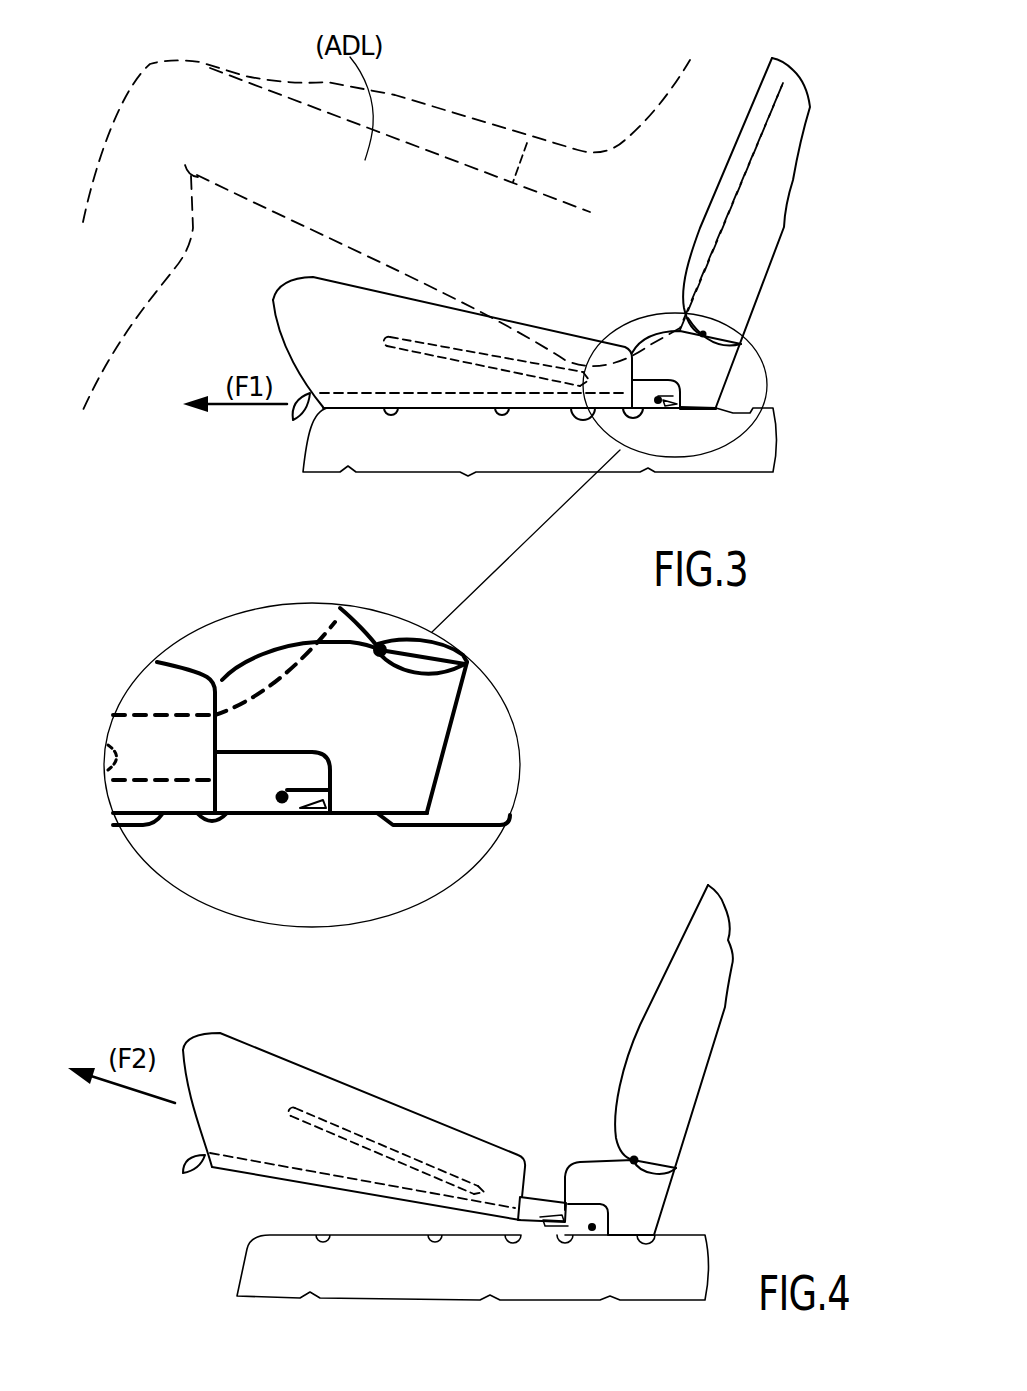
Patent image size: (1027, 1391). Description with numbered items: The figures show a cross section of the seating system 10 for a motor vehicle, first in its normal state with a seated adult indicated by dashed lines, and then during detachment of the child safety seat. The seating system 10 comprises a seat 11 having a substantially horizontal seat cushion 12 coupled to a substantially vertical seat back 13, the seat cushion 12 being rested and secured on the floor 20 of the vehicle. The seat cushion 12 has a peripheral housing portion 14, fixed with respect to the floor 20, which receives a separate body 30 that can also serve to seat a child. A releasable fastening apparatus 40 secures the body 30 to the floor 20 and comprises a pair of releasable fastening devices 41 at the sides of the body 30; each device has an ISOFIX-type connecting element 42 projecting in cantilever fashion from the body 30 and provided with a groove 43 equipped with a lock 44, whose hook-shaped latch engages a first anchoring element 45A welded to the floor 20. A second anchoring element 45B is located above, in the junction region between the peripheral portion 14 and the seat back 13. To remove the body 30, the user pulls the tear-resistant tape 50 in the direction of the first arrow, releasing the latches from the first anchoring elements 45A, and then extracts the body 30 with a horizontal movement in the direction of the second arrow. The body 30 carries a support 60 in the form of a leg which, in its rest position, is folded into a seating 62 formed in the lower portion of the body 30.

In FIG. 3, the seating system 10 is at (452, 489).
In FIG. 4, the seating system 10 is at (502, 1060).
In FIG. 3, the seat 11 is at (573, 137).
In FIG. 4, the seat 11 is at (556, 1112).
In FIG. 3, the seat cushion 12 is at (375, 542).
In FIG. 3, the seat back 13 is at (767, 240).
In FIG. 4, the seat back 13 is at (652, 1010).
In FIG. 3, the peripheral housing portion 14 is at (515, 549).
In FIG. 4, the peripheral housing portion 14 is at (649, 1165).
In FIG. 3, the floor 20 is at (357, 460).
In FIG. 4, the floor 20 is at (290, 1293).
In FIG. 3, the body 30 is at (323, 346).
In FIG. 4, the body 30 is at (350, 1072).
In FIG. 3, the releasable fastening apparatus 40 is at (515, 615).
In FIG. 3, the releasable fastening device 41 is at (686, 419).
In FIG. 3, the connecting element 42 is at (515, 610).
In FIG. 4, the connecting element 42 is at (538, 1210).
In FIG. 3, the groove 43 is at (676, 408).
In FIG. 3, the lock 44 is at (647, 385).
In FIG. 3, the first anchoring element 45A is at (658, 402).
In FIG. 4, the first anchoring element 45A is at (596, 1226).
In FIG. 3, the second anchoring element 45B is at (703, 335).
In FIG. 4, the second anchoring element 45B is at (636, 1160).
In FIG. 3, the tear-resistant tape 50 is at (448, 392).
In FIG. 4, the tear-resistant tape 50 is at (243, 1160).
In FIG. 4, the support 60 is at (355, 1132).
In FIG. 4, the seating 62 is at (391, 1155).